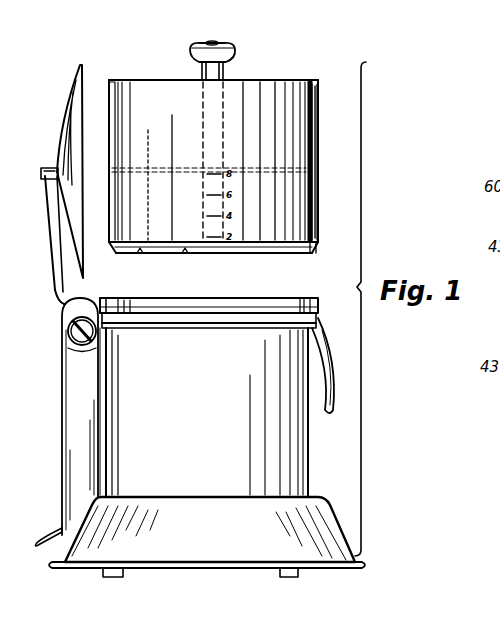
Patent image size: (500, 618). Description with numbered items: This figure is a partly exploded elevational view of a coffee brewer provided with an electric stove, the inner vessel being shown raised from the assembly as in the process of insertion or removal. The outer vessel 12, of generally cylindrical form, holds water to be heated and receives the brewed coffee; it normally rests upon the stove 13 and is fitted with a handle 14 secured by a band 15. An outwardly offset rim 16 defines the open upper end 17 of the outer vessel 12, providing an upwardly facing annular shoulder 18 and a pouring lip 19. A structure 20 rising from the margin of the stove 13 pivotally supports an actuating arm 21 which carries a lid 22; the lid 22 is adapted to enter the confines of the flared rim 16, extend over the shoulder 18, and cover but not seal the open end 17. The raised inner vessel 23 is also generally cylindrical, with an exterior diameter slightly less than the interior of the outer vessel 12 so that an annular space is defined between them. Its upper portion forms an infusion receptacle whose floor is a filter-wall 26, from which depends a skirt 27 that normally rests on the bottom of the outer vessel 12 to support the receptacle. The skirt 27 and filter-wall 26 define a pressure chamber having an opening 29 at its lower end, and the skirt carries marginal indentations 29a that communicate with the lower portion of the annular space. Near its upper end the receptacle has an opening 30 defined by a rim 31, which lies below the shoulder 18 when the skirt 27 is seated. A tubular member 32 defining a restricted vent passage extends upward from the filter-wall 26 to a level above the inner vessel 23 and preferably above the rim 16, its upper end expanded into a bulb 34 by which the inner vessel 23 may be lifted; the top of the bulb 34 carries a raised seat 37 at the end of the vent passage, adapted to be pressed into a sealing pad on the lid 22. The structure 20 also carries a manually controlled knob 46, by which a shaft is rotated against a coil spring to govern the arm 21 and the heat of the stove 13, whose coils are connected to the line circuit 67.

The outer vessel 12 is at (308, 446).
The stove 13 is at (332, 514).
The handle 14 is at (326, 350).
The band 15 is at (320, 323).
The outwardly offset rim 16 is at (320, 304).
The open upper end 17 is at (294, 298).
The annular shoulder 18 is at (108, 298).
The pouring lip 19 is at (118, 298).
The structure 20 is at (62, 388).
The actuating arm 21 is at (54, 278).
The lid 22 is at (60, 118).
The inner vessel 23 is at (328, 162).
The filter-wall 26 is at (314, 188).
The skirt 27 is at (317, 218).
The opening 29 is at (176, 256).
The marginal indentations 29a is at (283, 255).
The opening 30 is at (290, 80).
The rim 31 is at (112, 78).
The tubular member 32 is at (230, 75).
The bulb 34 is at (236, 50).
The raised seat 37 is at (210, 42).
The knob 46 is at (66, 330).
The line circuit 67 is at (46, 542).